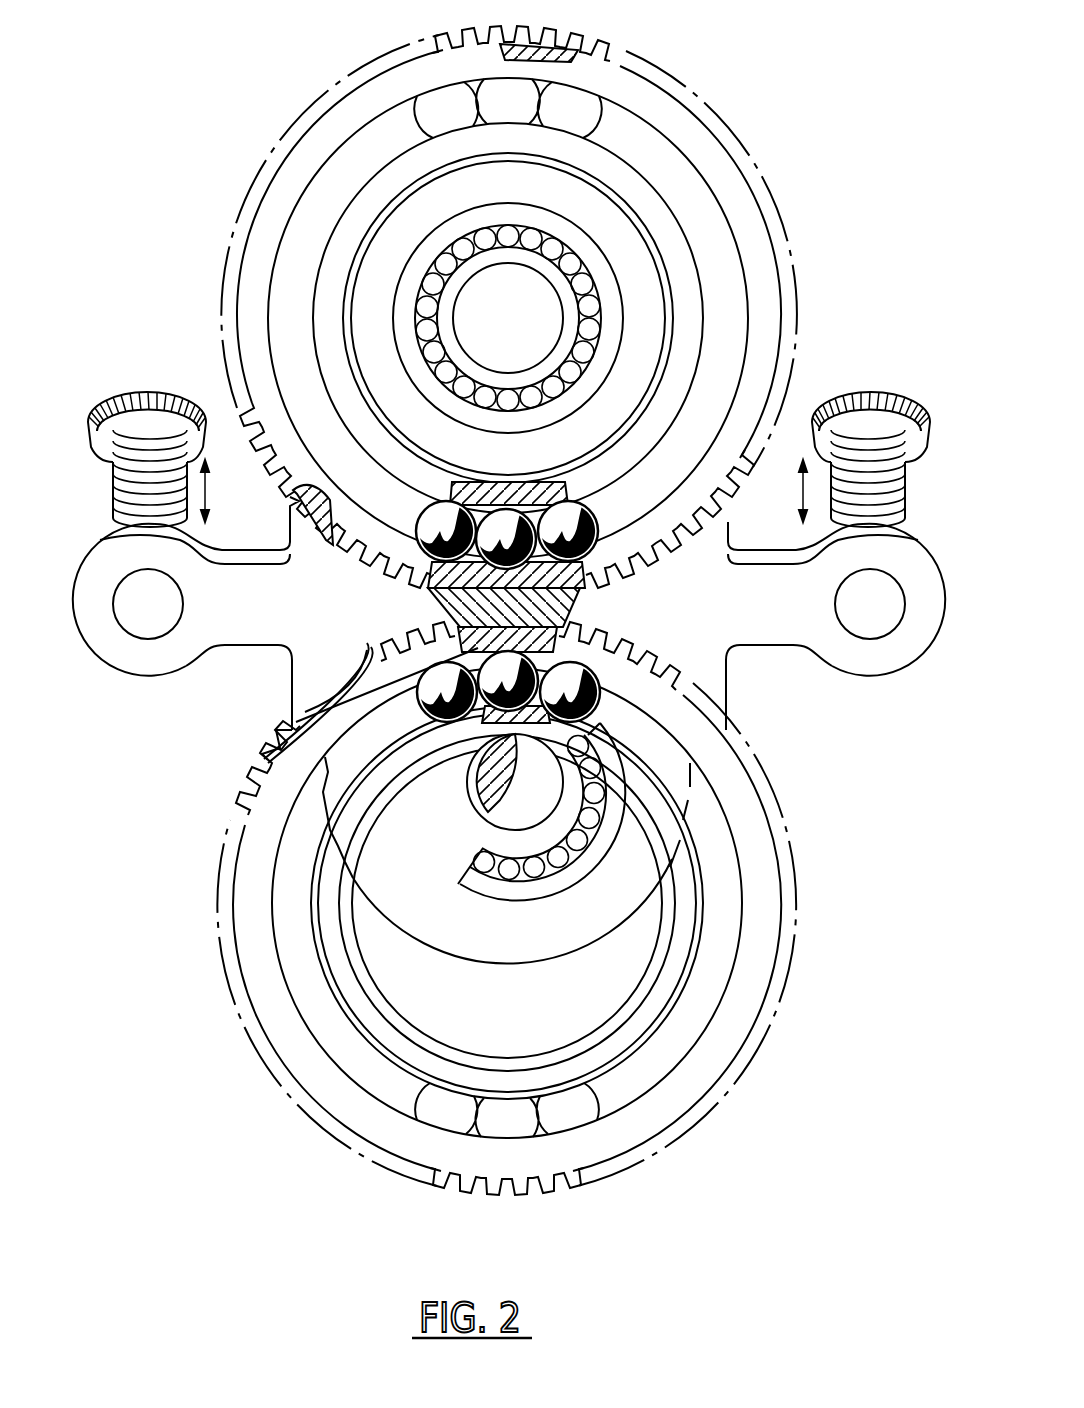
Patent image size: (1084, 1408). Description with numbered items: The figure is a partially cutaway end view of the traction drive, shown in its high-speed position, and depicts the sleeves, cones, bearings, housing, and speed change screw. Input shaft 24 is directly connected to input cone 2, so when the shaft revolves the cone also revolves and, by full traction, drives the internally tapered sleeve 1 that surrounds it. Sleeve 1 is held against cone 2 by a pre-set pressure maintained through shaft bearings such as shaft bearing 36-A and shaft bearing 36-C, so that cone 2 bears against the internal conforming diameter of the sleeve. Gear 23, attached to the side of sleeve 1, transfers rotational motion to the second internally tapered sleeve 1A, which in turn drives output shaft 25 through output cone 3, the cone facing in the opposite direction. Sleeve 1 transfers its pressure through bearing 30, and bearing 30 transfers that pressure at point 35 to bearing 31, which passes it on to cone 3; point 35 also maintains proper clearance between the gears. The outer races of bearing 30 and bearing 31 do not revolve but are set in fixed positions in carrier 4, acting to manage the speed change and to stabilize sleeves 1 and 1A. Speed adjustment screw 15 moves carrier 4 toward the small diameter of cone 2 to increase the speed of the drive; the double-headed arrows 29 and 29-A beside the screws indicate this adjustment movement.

The internally tapered sleeve 1 is at (683, 273).
The internally tapered sleeve 1A is at (687, 902).
The input cone 2 is at (633, 253).
The output cone 3 is at (452, 930).
The carrier 4 is at (183, 640).
The speed adjustment screw 15 is at (113, 481).
The gear 23 is at (627, 1130).
The input shaft 24 is at (485, 298).
The output shaft 25 is at (543, 777).
The adjustment travel 29 is at (784, 491).
The adjustment travel 29-A is at (238, 491).
The bearing 30 is at (578, 97).
The bearing 31 is at (470, 612).
The pressure transfer point 35 is at (290, 726).
The shaft bearing 36-A is at (557, 223).
The shaft bearing 36-C is at (607, 810).